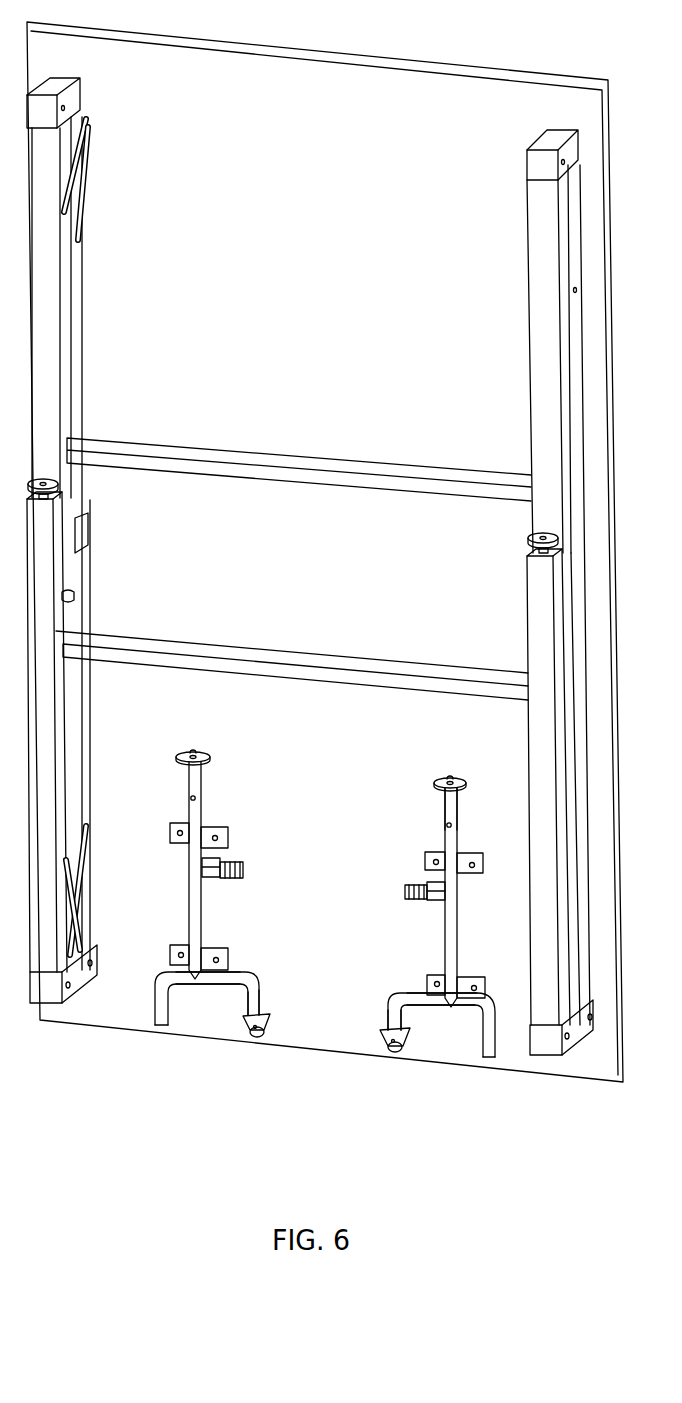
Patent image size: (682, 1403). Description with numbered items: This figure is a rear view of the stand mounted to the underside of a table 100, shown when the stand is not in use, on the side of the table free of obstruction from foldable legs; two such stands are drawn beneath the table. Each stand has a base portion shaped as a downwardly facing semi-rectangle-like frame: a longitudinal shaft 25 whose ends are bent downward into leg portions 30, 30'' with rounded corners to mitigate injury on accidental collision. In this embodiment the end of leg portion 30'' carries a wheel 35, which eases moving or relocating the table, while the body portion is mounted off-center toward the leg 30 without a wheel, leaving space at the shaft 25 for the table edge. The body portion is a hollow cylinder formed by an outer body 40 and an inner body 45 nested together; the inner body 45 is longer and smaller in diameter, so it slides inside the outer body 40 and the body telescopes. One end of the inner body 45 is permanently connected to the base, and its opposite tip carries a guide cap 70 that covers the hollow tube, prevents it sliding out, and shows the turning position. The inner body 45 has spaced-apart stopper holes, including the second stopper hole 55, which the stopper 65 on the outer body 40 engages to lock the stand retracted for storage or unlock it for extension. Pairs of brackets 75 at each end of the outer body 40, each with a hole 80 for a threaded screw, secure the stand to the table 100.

The table 100 is at (325, 552).
The shaft 25 is at (285, 1045).
The leg portion 30 is at (323, 1045).
The leg portion 30'' is at (324, 996).
The wheel 35 is at (270, 1063).
The outer body 40 is at (362, 884).
The inner body 45 is at (409, 799).
The second stopper hole 55 is at (329, 792).
The stopper 65 is at (323, 869).
The guide cap 70 is at (361, 742).
The bracket 75 is at (388, 903).
The hole 80 is at (276, 884).